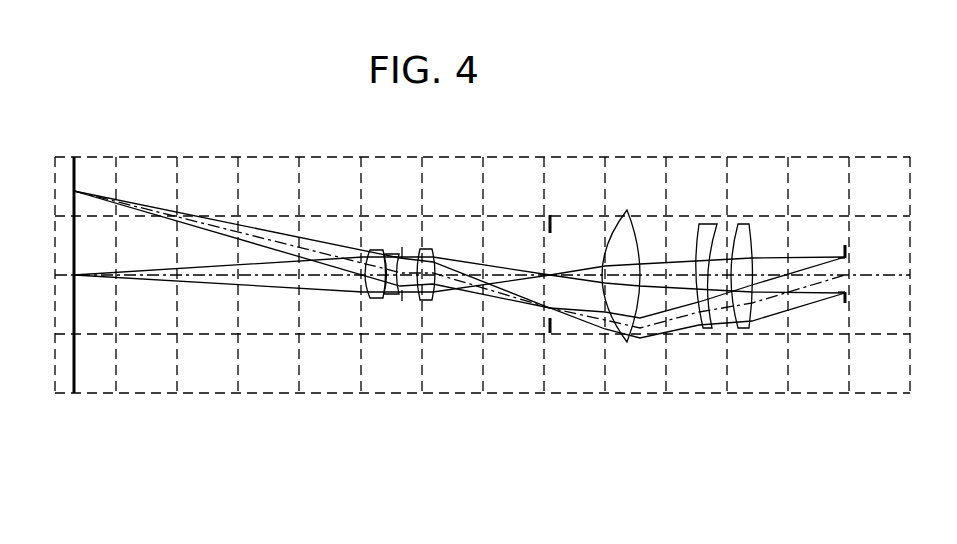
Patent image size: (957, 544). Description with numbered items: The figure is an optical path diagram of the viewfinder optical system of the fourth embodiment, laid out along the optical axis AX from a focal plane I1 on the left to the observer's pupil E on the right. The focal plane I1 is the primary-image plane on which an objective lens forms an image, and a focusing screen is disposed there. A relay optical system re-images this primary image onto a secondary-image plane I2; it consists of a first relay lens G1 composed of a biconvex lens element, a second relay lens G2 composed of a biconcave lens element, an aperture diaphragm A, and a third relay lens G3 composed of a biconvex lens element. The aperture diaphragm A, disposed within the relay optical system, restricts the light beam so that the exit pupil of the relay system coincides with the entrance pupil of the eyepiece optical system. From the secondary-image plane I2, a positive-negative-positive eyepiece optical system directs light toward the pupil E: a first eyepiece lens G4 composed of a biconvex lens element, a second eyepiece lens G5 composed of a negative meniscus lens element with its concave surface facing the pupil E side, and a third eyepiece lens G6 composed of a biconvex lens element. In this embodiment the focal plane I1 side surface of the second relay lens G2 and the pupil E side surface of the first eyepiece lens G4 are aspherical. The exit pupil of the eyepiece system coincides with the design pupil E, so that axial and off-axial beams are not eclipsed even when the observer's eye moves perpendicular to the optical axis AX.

The focal plane I1 is at (75, 360).
The first relay lens G1 is at (370, 300).
The second relay lens G2 is at (390, 300).
The aperture diaphragm A is at (407, 300).
The third relay lens G3 is at (424, 302).
The secondary-image plane I2 is at (550, 333).
The first eyepiece lens G4 is at (627, 344).
The second eyepiece lens G5 is at (707, 330).
The third eyepiece lens G6 is at (745, 330).
The optical axis AX is at (817, 276).
The pupil E is at (848, 300).